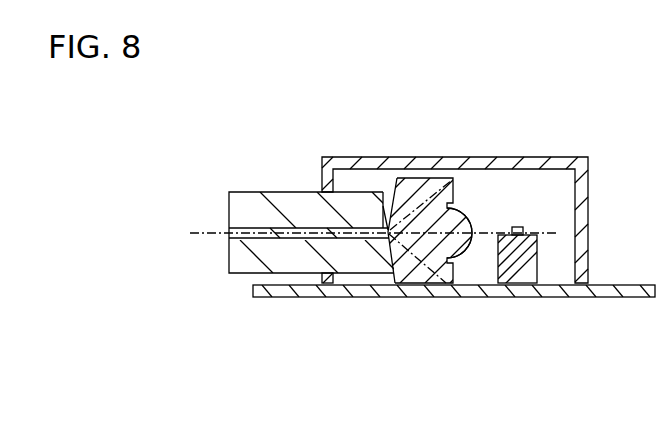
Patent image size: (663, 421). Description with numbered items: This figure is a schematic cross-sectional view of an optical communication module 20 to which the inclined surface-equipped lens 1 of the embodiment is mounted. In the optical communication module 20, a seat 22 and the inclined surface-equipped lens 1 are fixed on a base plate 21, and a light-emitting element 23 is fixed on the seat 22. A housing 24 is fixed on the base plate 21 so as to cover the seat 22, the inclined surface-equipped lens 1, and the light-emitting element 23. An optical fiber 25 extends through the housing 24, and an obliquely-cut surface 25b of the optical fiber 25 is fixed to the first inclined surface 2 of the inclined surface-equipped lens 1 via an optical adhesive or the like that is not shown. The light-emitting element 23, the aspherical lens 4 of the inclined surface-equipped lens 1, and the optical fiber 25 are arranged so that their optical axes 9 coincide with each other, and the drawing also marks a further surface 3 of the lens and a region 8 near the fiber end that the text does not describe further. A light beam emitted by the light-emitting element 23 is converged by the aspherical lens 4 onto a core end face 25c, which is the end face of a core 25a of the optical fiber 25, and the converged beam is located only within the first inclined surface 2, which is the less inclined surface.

The optical communication module 20 is at (321, 69).
The inclined surface-equipped lens 1 is at (437, 177).
The first inclined surface 2 is at (384, 250).
The reflecting surface 3 is at (393, 177).
The aspherical lens 4 is at (469, 213).
The fiber end 8 is at (387, 225).
The optical axes 9 is at (200, 232).
The base plate 21 is at (530, 297).
The seat 22 is at (538, 254).
The light-emitting element 23 is at (516, 227).
The housing 24 is at (505, 165).
The optical fiber 25 is at (243, 194).
The core 25a is at (300, 232).
The obliquely-cut surface 25b is at (395, 238).
The core end face 25c is at (418, 262).